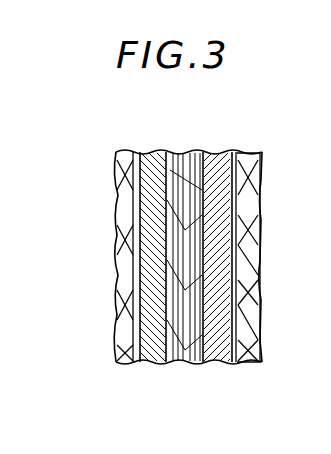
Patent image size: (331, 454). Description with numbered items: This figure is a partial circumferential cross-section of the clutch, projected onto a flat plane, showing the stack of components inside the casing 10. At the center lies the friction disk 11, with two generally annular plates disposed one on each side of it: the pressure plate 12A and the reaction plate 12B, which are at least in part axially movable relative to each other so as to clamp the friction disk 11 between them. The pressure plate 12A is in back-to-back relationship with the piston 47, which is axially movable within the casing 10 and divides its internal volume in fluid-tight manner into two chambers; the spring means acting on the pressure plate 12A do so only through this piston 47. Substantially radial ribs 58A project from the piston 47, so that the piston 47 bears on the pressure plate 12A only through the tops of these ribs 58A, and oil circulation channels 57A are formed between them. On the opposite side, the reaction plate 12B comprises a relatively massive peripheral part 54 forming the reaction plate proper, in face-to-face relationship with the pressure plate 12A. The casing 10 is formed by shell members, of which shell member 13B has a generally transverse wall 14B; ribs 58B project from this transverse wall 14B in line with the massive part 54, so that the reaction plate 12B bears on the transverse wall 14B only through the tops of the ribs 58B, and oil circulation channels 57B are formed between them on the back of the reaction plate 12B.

The casing 10 is at (243, 368).
The friction disk 11 is at (177, 148).
The pressure plate 12A is at (134, 368).
The reaction plate 12B is at (219, 367).
The shell member 13B is at (264, 153).
The transverse wall 14B is at (255, 270).
The piston 47 is at (118, 150).
The peripheral part 54 is at (230, 152).
The oil circulation channels 57A is at (112, 252).
The oil circulation channels 57B is at (243, 251).
The ribs 58A is at (112, 192).
The ribs 58B is at (257, 195).